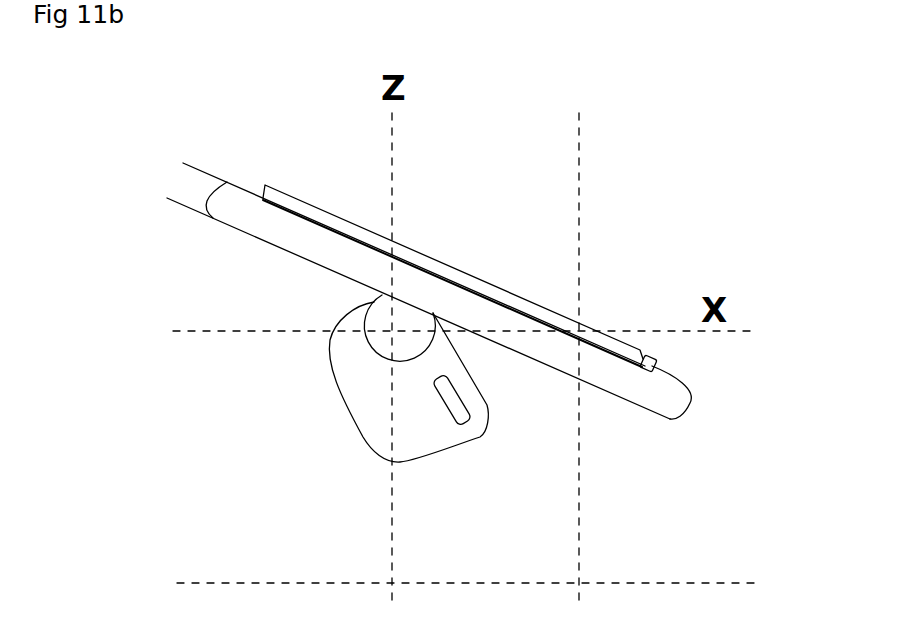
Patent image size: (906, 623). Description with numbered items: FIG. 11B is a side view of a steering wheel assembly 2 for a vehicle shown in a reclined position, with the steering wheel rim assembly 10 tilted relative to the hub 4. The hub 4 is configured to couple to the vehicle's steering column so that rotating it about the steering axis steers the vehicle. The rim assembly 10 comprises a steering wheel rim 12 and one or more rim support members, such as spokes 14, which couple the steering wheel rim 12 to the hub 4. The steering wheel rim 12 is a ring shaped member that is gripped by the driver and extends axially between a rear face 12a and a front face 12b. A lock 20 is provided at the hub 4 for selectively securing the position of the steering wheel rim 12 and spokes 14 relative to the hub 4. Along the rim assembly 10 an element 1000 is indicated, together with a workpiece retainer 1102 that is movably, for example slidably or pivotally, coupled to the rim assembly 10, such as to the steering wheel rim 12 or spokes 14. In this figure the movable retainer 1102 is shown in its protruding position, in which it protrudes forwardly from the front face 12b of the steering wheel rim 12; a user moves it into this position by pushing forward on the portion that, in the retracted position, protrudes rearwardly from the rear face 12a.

The steering wheel assembly 2 is at (634, 174).
The hub 4 is at (357, 392).
The rim assembly 10 is at (619, 444).
The steering wheel rim 12 is at (433, 289).
The rear face 12a is at (183, 206).
The front face 12b is at (203, 171).
The spokes 14 is at (385, 317).
The lock 20 is at (452, 417).
The strip element 1000 is at (457, 273).
The workpiece retainer 1102 is at (657, 362).